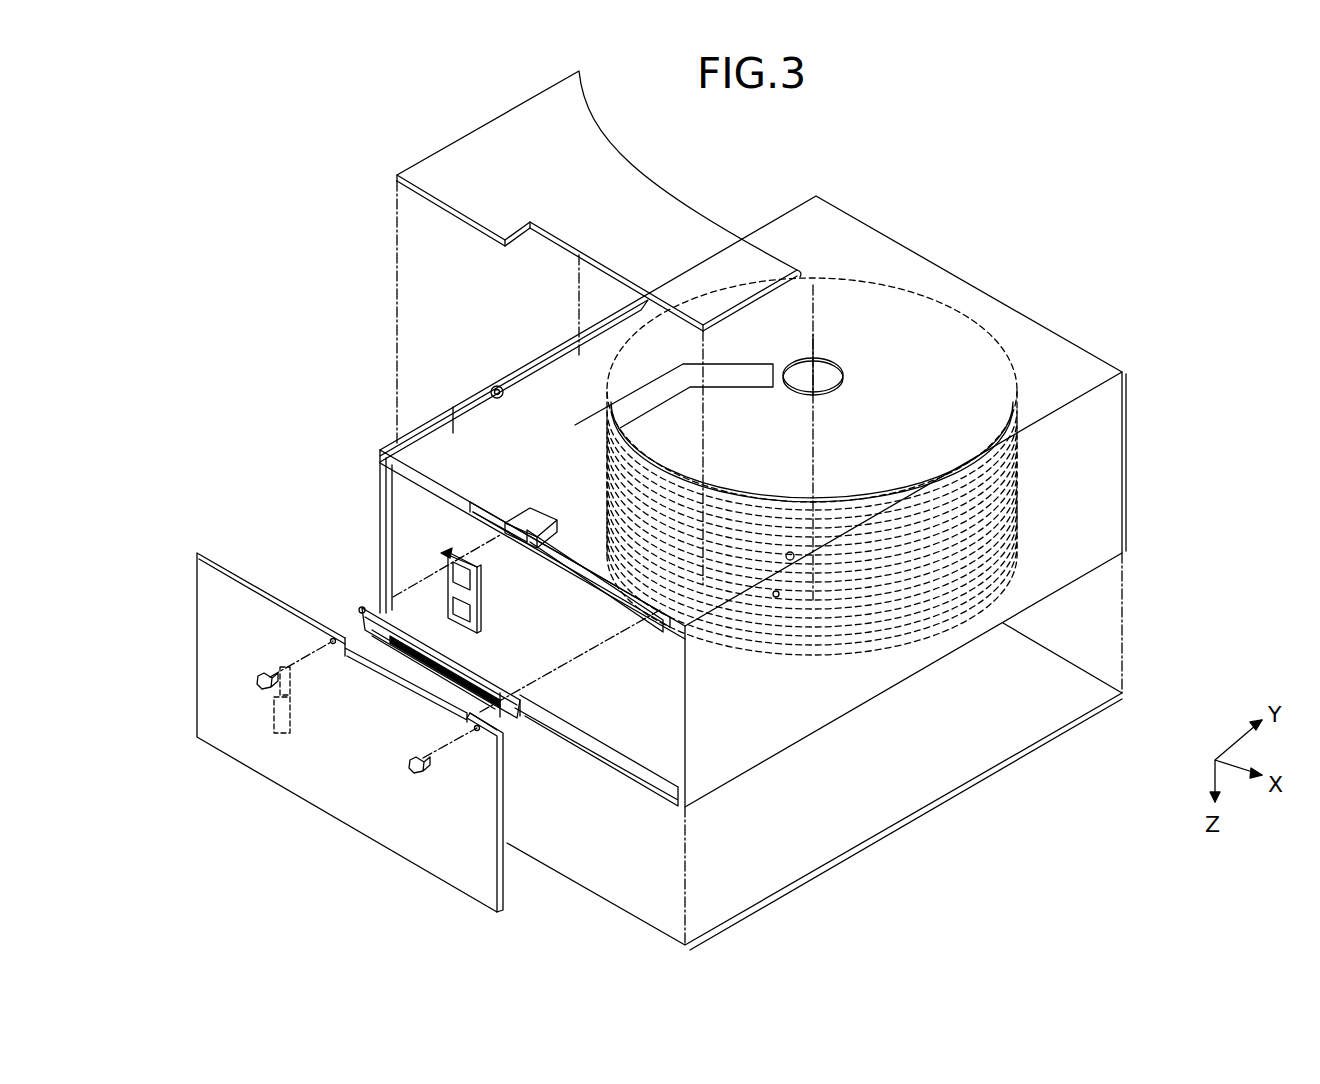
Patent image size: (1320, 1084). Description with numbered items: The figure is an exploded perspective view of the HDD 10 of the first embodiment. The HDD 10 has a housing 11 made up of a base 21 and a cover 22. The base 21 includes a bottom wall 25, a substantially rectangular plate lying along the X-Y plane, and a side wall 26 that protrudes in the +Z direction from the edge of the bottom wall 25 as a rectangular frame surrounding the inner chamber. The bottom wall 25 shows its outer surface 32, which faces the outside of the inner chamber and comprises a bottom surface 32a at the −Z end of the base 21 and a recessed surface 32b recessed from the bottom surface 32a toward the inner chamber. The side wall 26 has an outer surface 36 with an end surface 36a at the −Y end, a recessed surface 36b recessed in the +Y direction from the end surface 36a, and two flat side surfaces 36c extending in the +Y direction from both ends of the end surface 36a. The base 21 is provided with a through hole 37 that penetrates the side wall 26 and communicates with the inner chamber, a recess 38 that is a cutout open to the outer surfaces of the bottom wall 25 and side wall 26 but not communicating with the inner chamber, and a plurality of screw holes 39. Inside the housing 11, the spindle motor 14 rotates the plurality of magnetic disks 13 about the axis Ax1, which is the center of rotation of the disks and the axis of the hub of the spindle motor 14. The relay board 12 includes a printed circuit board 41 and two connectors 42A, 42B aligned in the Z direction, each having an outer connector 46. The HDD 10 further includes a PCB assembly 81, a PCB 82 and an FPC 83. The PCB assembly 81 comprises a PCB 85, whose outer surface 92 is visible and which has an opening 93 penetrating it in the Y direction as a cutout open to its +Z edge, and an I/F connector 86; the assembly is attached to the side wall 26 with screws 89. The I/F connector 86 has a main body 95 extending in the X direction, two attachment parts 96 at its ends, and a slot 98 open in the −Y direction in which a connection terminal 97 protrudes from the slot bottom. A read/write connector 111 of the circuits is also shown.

The HDD 10 is at (282, 104).
The housing 11 is at (1128, 369).
The relay board 12 is at (355, 529).
The magnetic disks 13 is at (1020, 300).
The spindle motor 14 is at (833, 373).
The base 21 is at (787, 417).
The cover 22 is at (1003, 768).
The bottom wall 25 is at (787, 417).
The side wall 26 is at (979, 589).
The outer surface 32 is at (787, 417).
The bottom surface 32a is at (1055, 364).
The recessed surface 32b is at (453, 433).
The outer surface 36 is at (979, 589).
The end surface 36a is at (400, 498).
The recessed surface 36b is at (410, 543).
The side surfaces 36c is at (1093, 472).
The through hole 37 is at (447, 567).
The recess 38 is at (555, 522).
The screw holes 39 is at (491, 386).
The printed circuit board 41 is at (444, 554).
The connector 42A is at (467, 552).
The connector 42B is at (373, 587).
The outer connector 46 is at (450, 607).
The PCB assembly 81 is at (333, 824).
The PCB 82 is at (528, 100).
The FPC 83 is at (736, 366).
The PCB 85 is at (350, 753).
The I/F connector 86 is at (358, 614).
The screws 89 is at (258, 680).
The outer surface 92 is at (407, 845).
The opening 93 is at (342, 670).
The main body 95 is at (568, 714).
The attachment parts 96 is at (518, 682).
The connection terminal 97 is at (387, 652).
The slot 98 is at (355, 668).
The read/write connector 111 is at (278, 736).
The axis Ax1 is at (817, 345).